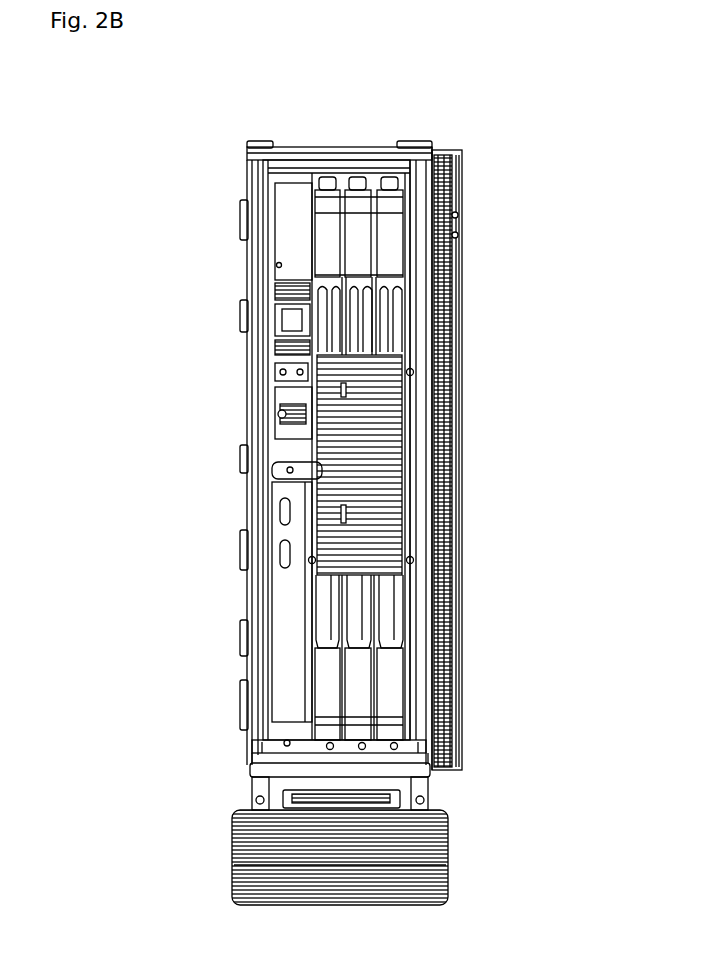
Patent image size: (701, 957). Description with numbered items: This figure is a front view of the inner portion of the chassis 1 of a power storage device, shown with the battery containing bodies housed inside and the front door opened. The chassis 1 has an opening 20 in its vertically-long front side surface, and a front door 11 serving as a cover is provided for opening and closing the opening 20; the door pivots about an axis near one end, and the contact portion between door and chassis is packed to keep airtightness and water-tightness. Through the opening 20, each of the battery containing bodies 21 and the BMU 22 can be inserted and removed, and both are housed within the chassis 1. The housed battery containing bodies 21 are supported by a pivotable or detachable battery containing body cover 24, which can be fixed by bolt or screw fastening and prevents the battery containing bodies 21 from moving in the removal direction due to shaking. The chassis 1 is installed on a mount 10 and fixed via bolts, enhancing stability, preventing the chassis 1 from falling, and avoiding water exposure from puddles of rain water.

The chassis 1 is at (421, 132).
The mount 10 is at (448, 838).
The front door 11 is at (458, 190).
The opening 20 is at (295, 182).
The battery containing bodies 21 is at (335, 265).
The BMU 22 is at (292, 600).
The battery containing body cover 24 is at (345, 405).